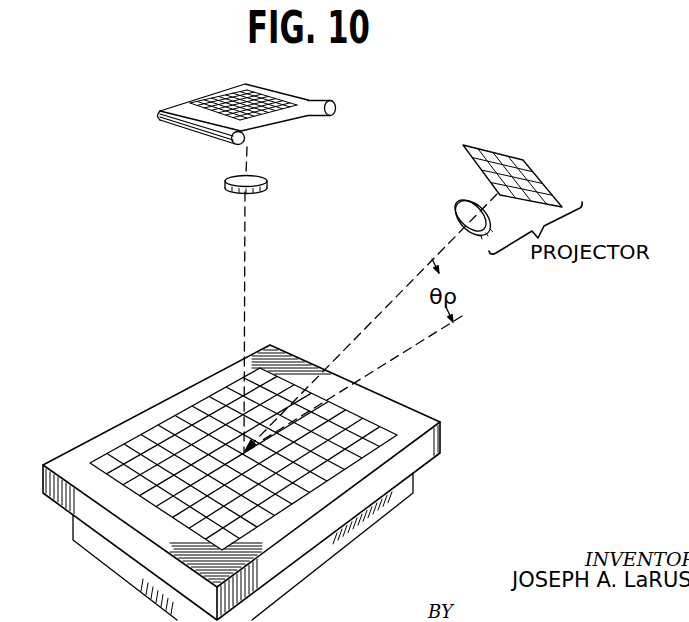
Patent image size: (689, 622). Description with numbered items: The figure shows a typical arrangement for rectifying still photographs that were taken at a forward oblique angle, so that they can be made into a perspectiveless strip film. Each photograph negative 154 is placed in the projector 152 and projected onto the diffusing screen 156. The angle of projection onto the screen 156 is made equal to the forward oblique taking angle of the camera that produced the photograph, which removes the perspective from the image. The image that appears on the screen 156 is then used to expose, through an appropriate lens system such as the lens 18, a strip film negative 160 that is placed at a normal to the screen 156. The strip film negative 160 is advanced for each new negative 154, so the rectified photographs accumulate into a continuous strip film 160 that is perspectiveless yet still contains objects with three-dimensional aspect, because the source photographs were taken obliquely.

The strip film negative 160 is at (297, 91).
The lens 18 is at (225, 188).
The projector 152 is at (453, 208).
The negative 154 is at (530, 167).
The diffusing screen 156 is at (386, 428).